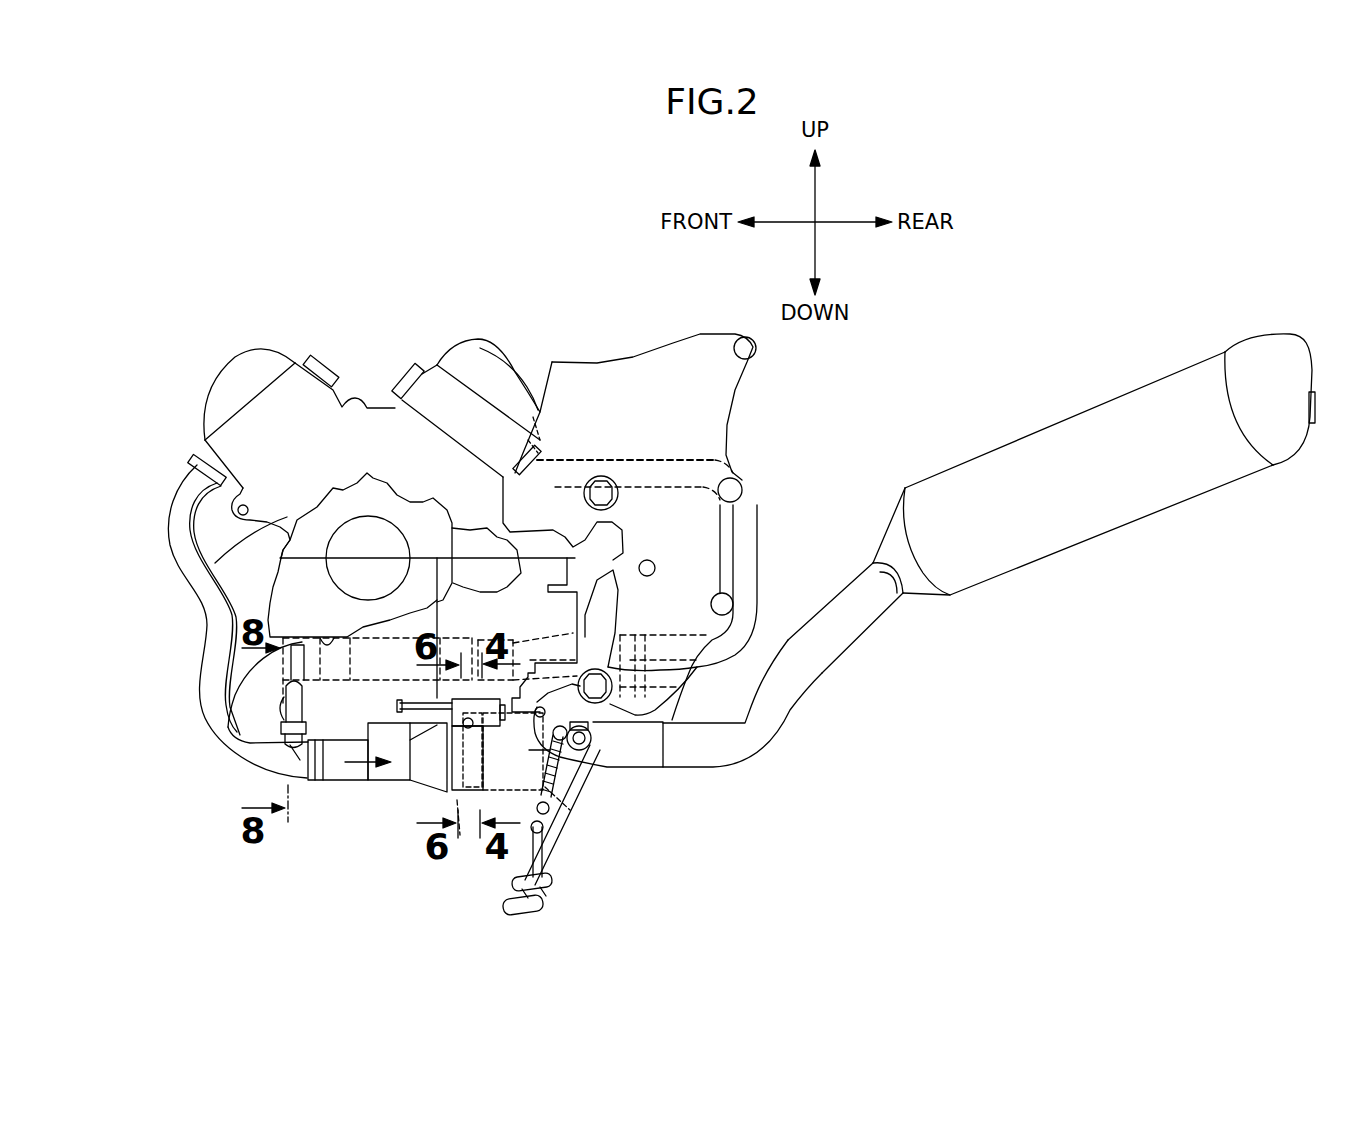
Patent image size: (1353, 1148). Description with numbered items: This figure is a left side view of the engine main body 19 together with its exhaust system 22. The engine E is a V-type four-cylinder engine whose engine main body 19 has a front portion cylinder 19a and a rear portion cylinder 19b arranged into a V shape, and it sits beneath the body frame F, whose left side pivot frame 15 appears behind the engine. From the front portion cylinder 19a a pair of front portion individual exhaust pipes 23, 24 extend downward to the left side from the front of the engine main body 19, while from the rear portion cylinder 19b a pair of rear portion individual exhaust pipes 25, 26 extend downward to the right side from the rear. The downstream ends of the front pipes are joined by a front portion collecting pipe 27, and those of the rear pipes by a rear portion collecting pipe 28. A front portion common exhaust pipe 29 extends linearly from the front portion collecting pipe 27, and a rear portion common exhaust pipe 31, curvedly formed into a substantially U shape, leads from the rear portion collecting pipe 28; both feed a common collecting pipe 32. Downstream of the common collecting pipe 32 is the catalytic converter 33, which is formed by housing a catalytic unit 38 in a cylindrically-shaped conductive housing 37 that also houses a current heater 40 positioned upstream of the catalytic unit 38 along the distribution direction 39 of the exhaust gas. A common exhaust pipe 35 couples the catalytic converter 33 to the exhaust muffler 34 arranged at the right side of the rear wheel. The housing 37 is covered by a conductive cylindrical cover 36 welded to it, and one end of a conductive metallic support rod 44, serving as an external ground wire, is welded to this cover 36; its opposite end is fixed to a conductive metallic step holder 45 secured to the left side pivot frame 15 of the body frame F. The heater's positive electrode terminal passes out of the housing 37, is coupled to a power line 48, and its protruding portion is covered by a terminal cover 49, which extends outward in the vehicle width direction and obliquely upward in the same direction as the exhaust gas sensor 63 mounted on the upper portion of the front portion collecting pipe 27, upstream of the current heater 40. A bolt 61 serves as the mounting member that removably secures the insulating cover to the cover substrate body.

The left side pivot frame 15 is at (708, 560).
The engine main body 19 is at (360, 428).
The front portion cylinder 19a is at (248, 422).
The rear portion cylinder 19b is at (470, 402).
The exhaust system 22 is at (300, 797).
The front portion individual exhaust pipe 23 is at (180, 550).
The front portion individual exhaust pipe 24 is at (268, 522).
The rear portion individual exhaust pipe 25 is at (754, 610).
The rear portion individual exhaust pipe 26 is at (720, 677).
The front portion collecting pipe 27 is at (252, 755).
The rear portion collecting pipe 28 is at (567, 635).
The front portion common exhaust pipe 29 is at (345, 777).
The rear portion common exhaust pipe 31 is at (252, 690).
The common collecting pipe 32 is at (417, 773).
The catalytic converter 33 is at (498, 754).
The exhaust muffler 34 is at (1037, 455).
The common exhaust pipe 35 is at (850, 633).
The cover 36 is at (553, 793).
The housing 37 is at (487, 790).
The catalytic unit 38 is at (552, 840).
The distribution direction 39 is at (357, 753).
The current heater 40 is at (466, 795).
The support rod 44 is at (530, 777).
The step holder 45 is at (617, 728).
The power line 48 is at (408, 704).
The terminal cover 49 is at (460, 703).
The bolt 61 is at (445, 735).
The exhaust gas sensor 63 is at (302, 702).
The engine E is at (532, 496).
The body frame F is at (740, 437).